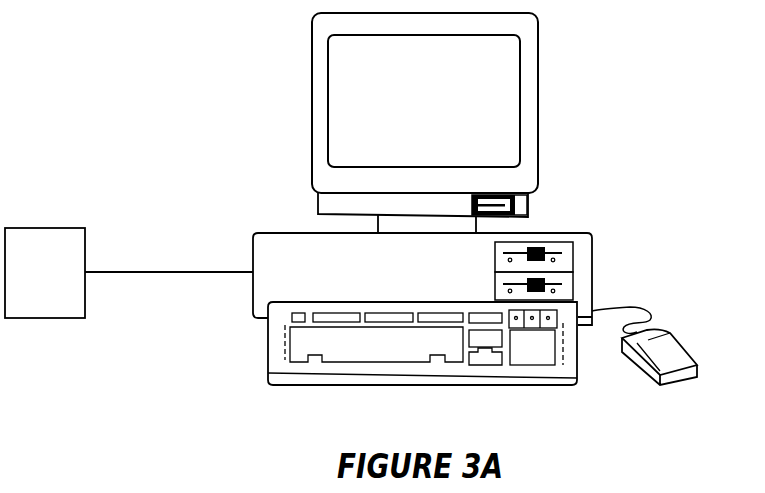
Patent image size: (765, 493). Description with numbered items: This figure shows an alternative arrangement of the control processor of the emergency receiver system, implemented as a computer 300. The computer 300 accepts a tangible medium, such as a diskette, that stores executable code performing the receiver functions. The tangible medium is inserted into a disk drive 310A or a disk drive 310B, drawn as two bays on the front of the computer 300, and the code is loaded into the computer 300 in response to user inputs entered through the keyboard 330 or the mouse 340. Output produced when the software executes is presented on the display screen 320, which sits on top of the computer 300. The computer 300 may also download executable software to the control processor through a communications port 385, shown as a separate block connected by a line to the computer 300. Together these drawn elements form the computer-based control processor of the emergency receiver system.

The computer 300 is at (422, 225).
The disk drive 310A is at (495, 256).
The disk drive 310B is at (495, 287).
The display screen 320 is at (547, 137).
The keyboard 330 is at (266, 343).
The mouse 340 is at (679, 333).
The communications port 385 is at (129, 239).